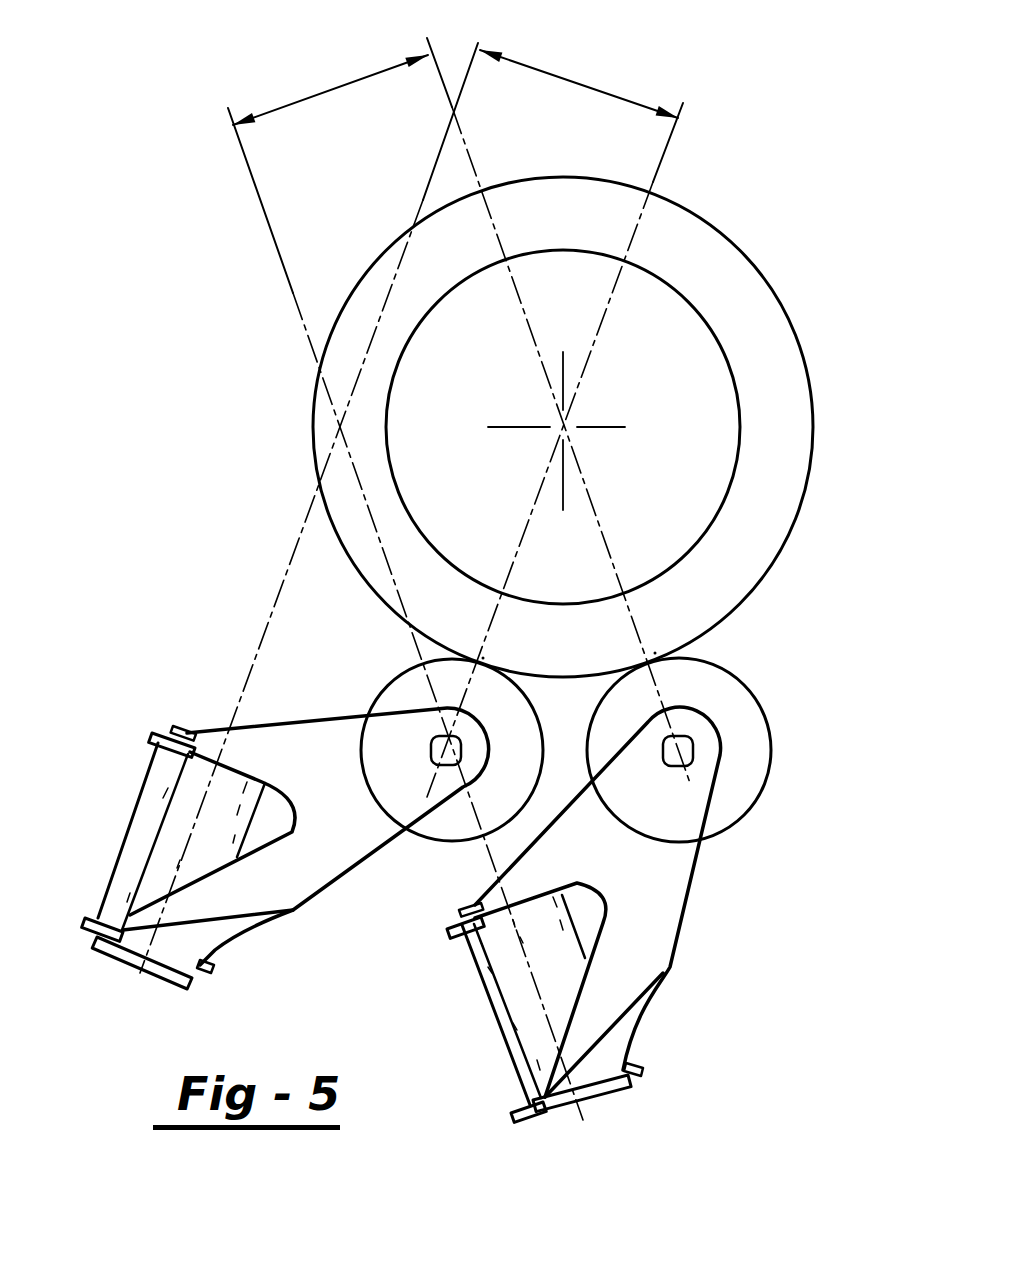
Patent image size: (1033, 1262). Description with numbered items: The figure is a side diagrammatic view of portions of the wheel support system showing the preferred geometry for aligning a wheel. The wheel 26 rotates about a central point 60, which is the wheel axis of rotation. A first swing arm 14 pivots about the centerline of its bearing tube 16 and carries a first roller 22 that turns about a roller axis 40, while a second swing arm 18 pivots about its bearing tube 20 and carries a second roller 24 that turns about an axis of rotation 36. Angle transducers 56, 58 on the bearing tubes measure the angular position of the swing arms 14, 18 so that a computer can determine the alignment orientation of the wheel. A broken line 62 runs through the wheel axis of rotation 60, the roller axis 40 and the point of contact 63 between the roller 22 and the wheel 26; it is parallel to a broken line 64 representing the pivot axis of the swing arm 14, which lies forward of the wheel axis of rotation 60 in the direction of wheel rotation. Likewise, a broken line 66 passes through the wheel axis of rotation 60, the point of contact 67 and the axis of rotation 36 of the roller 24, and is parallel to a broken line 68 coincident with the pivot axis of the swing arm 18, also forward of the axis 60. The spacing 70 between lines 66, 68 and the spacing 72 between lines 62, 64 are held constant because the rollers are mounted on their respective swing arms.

The first swing arm 14 is at (378, 782).
The bearing tube 16 is at (160, 830).
The second swing arm 18 is at (668, 818).
The bearing tube 20 is at (513, 993).
The first roller 22 is at (380, 683).
The second roller 24 is at (758, 697).
The wheel 26 is at (790, 405).
The axis of rotation of roller 24 36 is at (695, 756).
The roller axis of roller 22 40 is at (440, 752).
The angle transducer 56 is at (177, 730).
The angle transducer 58 is at (470, 898).
The central point 60 is at (566, 425).
The broken line 62 is at (657, 167).
The point of contact 63 is at (500, 652).
The broken line 64 is at (290, 558).
The broken line 66 is at (600, 523).
The point of contact 67 is at (663, 640).
The broken line 68 is at (290, 290).
The spacing 70 is at (330, 88).
The spacing 72 is at (593, 88).